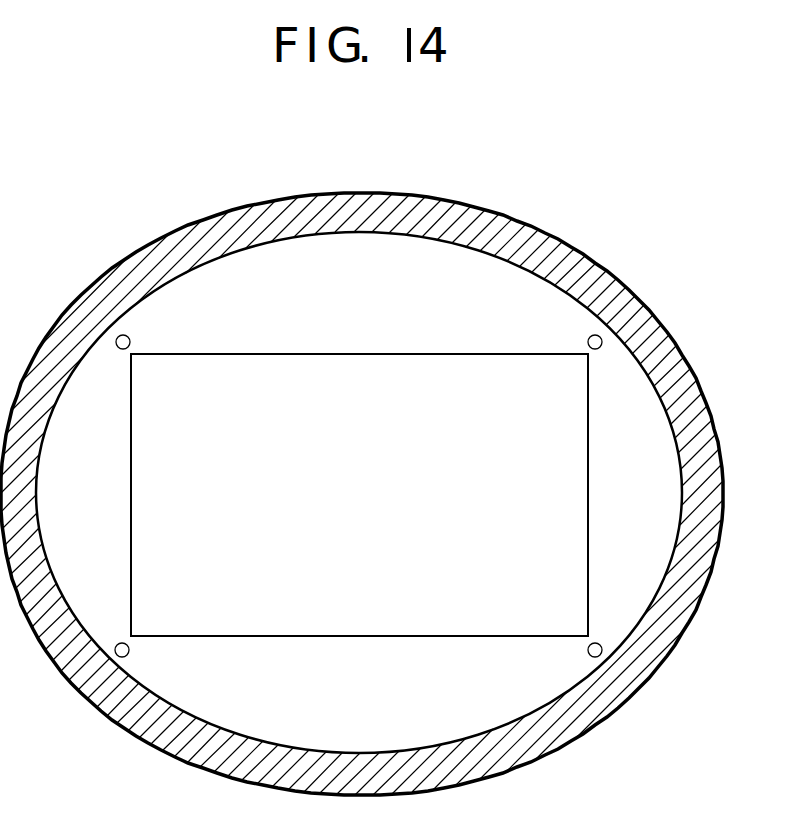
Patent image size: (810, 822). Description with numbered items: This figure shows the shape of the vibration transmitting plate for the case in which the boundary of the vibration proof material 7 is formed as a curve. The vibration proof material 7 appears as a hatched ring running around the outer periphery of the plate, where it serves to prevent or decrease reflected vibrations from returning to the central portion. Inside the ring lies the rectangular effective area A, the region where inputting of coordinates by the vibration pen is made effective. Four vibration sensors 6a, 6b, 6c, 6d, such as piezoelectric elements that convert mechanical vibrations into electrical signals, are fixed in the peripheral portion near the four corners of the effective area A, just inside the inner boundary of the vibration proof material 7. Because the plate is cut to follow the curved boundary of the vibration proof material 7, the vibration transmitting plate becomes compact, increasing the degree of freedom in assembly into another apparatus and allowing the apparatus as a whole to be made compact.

The vibration proof material 7 is at (710, 465).
The vibration sensor 6a is at (118, 336).
The vibration sensor 6b is at (600, 335).
The vibration sensor 6c is at (117, 656).
The vibration sensor 6d is at (600, 656).
The effective area A is at (372, 506).